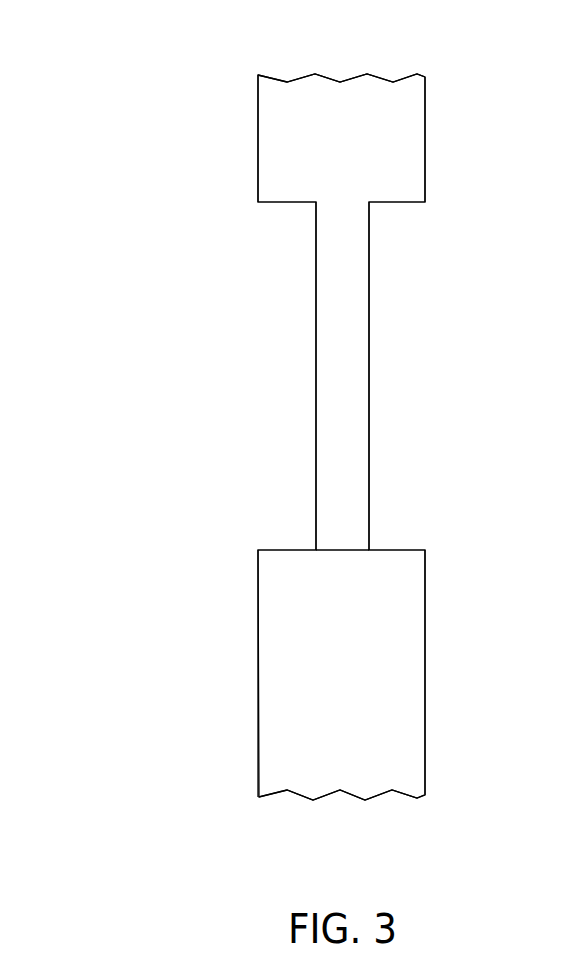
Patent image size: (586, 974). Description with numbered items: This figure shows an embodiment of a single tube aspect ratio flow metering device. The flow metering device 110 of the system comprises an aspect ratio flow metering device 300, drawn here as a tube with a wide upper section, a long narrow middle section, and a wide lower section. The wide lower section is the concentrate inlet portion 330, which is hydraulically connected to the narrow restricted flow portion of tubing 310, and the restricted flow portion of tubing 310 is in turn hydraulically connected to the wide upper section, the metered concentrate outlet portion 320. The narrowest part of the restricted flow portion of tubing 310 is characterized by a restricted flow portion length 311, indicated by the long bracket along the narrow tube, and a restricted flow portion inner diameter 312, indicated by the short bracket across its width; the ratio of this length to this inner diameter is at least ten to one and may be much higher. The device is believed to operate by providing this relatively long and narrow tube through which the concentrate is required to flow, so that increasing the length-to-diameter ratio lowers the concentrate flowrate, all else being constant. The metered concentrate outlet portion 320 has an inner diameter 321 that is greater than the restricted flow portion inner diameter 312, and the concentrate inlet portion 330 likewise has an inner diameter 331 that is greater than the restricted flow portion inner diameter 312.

The flow metering device 110 is at (135, 136).
The aspect ratio flow metering device 300 is at (180, 256).
The restricted flow portion of tubing 310 is at (369, 375).
The restricted flow portion length 311 is at (247, 202).
The restricted flow portion inner diameter 312 is at (369, 552).
The metered concentrate outlet portion 320 is at (425, 133).
The inner diameter of the metered concentrate outlet portion 321 is at (425, 68).
The concentrate inlet portion 330 is at (424, 668).
The inner diameter of the concentrate inlet portion 331 is at (425, 805).